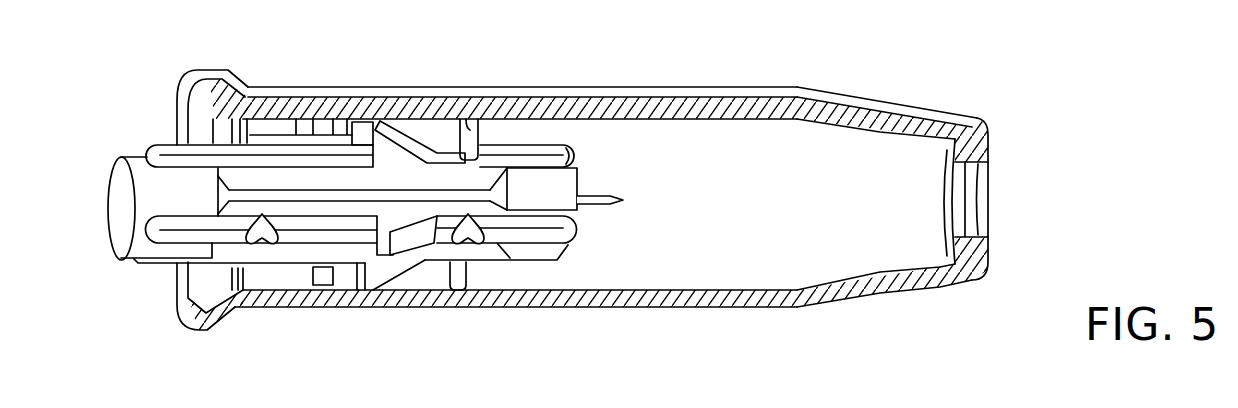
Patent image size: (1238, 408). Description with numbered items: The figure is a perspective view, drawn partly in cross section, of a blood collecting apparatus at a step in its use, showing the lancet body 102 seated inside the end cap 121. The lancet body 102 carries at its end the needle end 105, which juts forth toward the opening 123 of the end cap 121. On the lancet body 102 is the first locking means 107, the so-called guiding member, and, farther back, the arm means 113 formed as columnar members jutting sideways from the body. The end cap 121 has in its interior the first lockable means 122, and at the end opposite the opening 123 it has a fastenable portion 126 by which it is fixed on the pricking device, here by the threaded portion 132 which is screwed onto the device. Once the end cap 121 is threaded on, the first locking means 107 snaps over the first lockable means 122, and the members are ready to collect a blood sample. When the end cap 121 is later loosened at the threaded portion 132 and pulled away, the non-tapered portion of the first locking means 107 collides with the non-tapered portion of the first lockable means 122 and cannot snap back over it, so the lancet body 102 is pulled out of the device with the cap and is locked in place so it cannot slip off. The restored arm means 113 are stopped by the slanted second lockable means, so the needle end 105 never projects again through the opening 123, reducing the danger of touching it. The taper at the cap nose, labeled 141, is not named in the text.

The lancet body 102 is at (297, 168).
The needle end 105 is at (597, 203).
The first locking means 107 is at (420, 121).
The arm means 113 is at (500, 119).
The end cap 121 is at (733, 293).
The first lockable means 122 is at (360, 135).
The opening 123 is at (962, 200).
The fastenable portion 126 is at (236, 229).
The threaded portion 132 is at (233, 295).
The tapered portion 141 is at (873, 117).